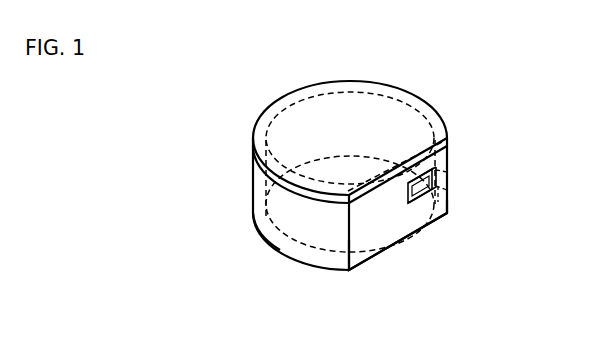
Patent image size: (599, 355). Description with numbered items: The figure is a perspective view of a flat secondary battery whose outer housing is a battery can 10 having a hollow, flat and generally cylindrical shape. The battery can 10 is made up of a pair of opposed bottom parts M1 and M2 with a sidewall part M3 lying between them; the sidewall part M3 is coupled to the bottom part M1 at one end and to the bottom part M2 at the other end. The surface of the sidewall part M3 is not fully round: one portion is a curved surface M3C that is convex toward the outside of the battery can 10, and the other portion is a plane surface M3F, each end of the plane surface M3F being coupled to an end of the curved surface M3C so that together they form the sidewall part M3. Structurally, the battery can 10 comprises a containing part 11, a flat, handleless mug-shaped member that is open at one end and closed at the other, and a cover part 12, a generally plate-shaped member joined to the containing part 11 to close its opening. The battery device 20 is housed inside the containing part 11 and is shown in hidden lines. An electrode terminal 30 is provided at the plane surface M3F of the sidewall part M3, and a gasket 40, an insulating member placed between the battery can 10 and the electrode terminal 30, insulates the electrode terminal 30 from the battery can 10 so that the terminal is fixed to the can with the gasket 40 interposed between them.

The battery can 10 is at (277, 113).
The cover part 12 is at (252, 153).
The battery device 20 is at (262, 203).
The containing part 11 is at (433, 215).
The electrode terminal 30 is at (446, 196).
The gasket 40 is at (440, 167).
The bottom part M1 is at (422, 122).
The bottom part M2 is at (314, 257).
The sidewall part M3 is at (378, 228).
The plane surface M3F is at (398, 174).
The curved surface M3C is at (255, 228).